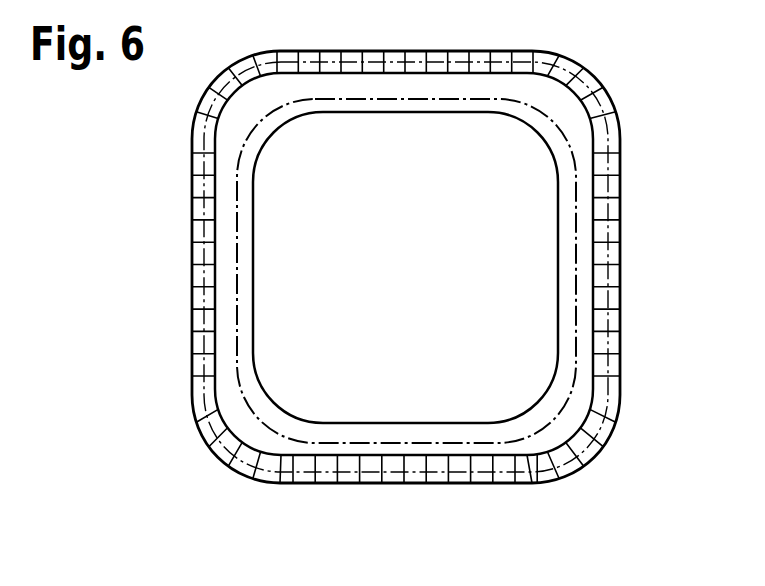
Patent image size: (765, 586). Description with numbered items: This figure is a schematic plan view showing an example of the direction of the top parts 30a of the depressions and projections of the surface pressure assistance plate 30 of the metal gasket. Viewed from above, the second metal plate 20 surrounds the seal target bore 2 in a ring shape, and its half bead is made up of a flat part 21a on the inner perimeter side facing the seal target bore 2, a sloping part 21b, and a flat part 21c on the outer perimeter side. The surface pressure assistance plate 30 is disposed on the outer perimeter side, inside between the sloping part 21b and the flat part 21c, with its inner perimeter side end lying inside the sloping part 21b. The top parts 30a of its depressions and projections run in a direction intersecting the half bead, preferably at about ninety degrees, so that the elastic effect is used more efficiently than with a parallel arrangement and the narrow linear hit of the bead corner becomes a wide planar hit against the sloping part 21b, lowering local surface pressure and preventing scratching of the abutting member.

The seal target bore 2 is at (468, 218).
The second metal plate 20 is at (433, 432).
The flat part on the inner perimeter side 21a is at (360, 430).
The sloping part 21b is at (328, 462).
The flat part on the outer perimeter side 21c is at (235, 468).
The surface pressure assistance plate 30 is at (598, 275).
The top parts of the depressions and projections 30a is at (602, 170).